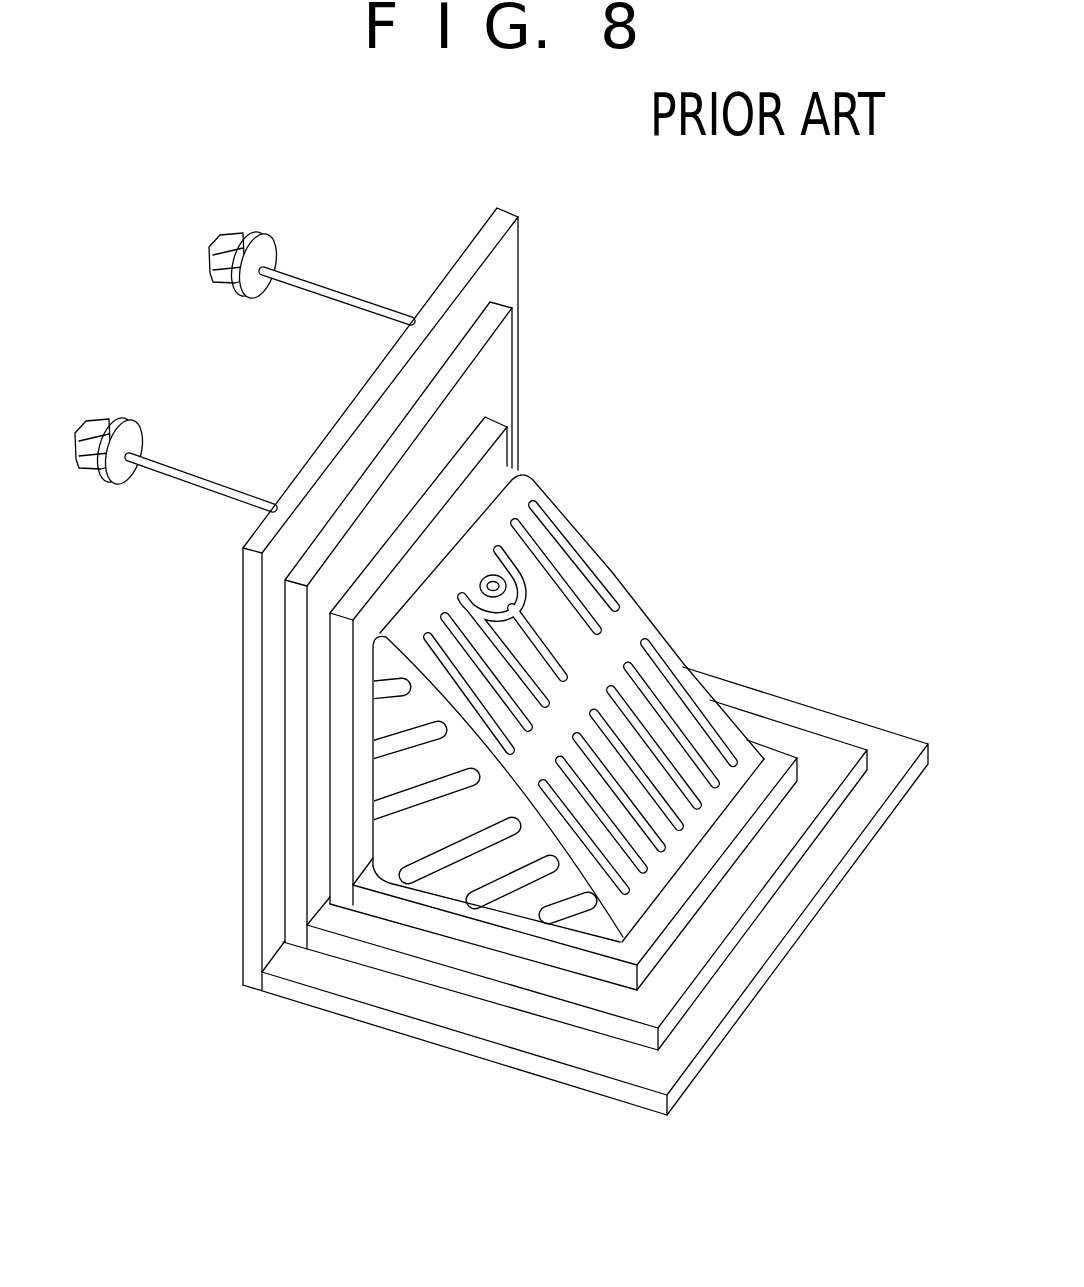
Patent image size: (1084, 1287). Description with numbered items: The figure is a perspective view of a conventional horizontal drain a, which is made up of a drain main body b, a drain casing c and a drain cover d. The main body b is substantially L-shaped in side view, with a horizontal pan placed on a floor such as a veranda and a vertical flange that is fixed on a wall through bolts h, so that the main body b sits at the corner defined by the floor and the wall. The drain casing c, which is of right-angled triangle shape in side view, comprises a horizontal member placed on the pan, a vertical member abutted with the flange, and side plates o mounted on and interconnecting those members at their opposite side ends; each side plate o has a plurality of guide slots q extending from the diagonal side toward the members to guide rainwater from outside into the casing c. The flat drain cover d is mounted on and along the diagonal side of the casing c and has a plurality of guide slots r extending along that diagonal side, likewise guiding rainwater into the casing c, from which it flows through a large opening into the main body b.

The horizontal drain a is at (677, 343).
The drain main body b is at (243, 732).
The drain casing c is at (573, 977).
The drain cover d is at (612, 567).
The bolts h is at (338, 300).
The side plates o is at (540, 913).
The guide slots q is at (495, 902).
The guide slots r is at (650, 740).